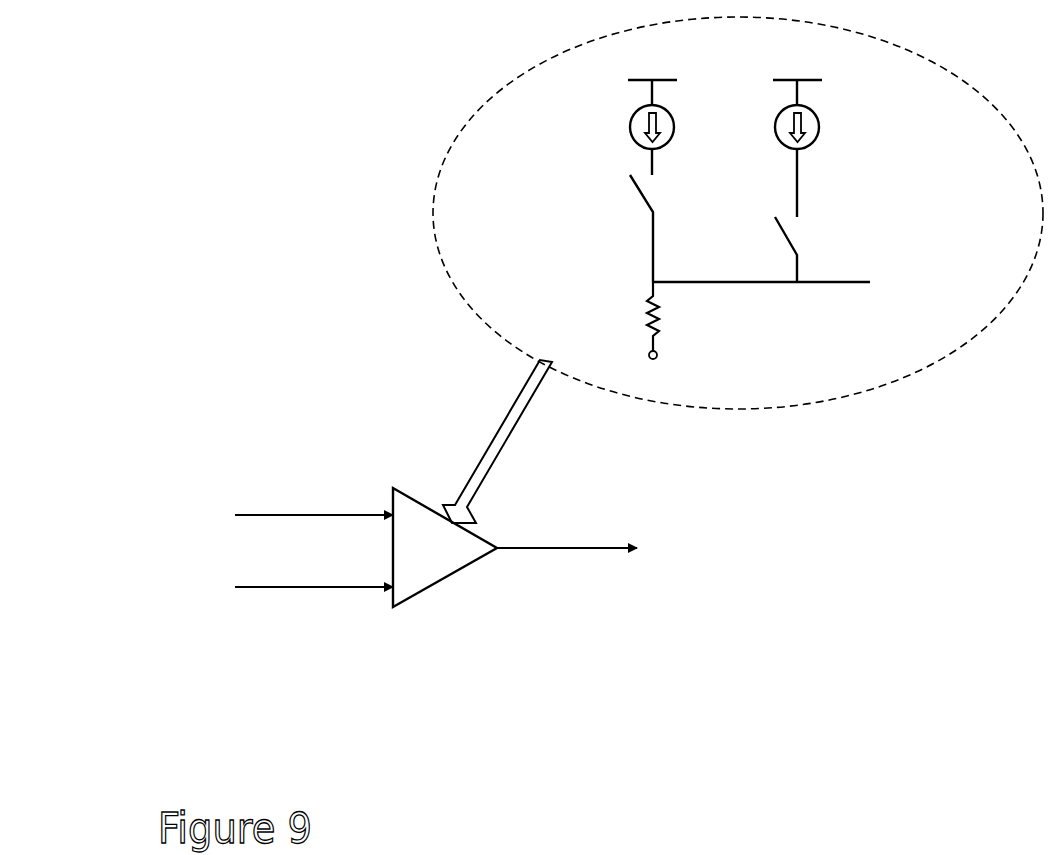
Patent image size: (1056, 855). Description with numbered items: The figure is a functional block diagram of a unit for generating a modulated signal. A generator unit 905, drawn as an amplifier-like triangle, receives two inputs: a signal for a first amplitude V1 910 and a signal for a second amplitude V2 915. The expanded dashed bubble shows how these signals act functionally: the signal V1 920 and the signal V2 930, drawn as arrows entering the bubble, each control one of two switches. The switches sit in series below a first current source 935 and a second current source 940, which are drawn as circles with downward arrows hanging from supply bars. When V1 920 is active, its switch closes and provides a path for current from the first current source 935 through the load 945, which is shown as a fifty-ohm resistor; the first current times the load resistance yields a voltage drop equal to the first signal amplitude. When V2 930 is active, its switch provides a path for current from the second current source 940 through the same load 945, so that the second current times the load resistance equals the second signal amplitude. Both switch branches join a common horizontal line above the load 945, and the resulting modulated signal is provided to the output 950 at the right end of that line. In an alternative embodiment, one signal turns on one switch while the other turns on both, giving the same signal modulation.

The generator unit 905 is at (434, 588).
The signal for a first amplitude V1 910 is at (291, 508).
The signal for a second amplitude V2 915 is at (291, 601).
The V1 control signal 920 is at (592, 178).
The V2 control signal 930 is at (592, 267).
The first current source 935 is at (680, 127).
The second current source 940 is at (825, 127).
The load 945 is at (674, 320).
The output 950 is at (788, 281).